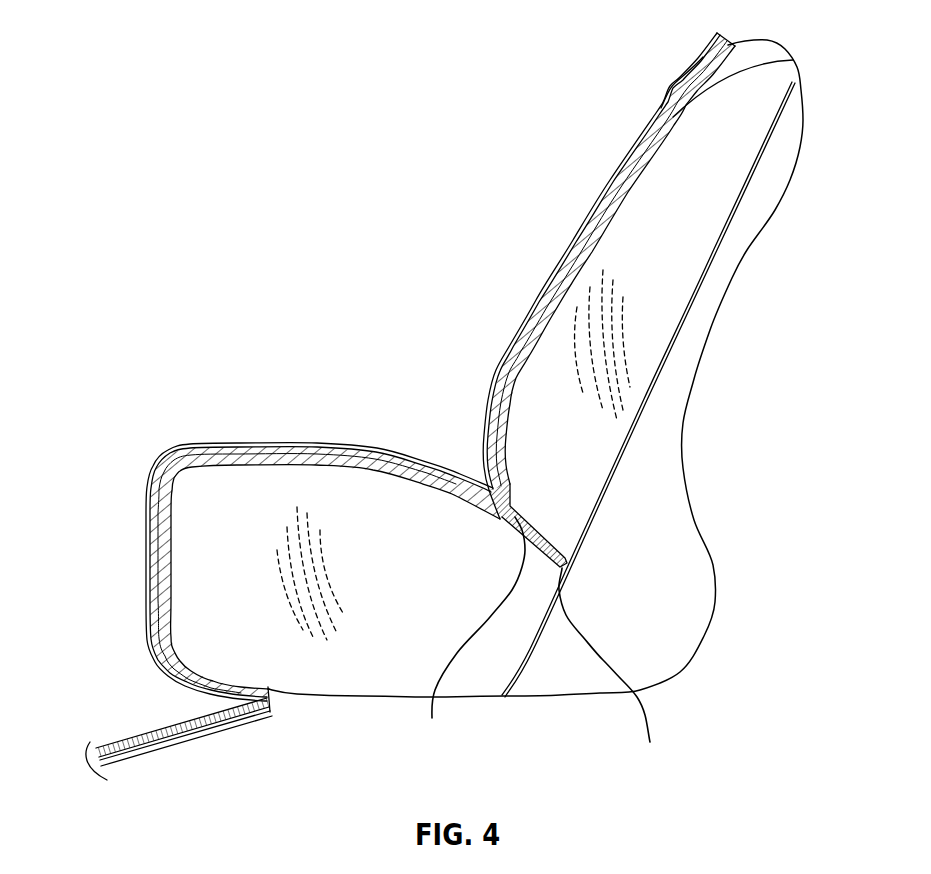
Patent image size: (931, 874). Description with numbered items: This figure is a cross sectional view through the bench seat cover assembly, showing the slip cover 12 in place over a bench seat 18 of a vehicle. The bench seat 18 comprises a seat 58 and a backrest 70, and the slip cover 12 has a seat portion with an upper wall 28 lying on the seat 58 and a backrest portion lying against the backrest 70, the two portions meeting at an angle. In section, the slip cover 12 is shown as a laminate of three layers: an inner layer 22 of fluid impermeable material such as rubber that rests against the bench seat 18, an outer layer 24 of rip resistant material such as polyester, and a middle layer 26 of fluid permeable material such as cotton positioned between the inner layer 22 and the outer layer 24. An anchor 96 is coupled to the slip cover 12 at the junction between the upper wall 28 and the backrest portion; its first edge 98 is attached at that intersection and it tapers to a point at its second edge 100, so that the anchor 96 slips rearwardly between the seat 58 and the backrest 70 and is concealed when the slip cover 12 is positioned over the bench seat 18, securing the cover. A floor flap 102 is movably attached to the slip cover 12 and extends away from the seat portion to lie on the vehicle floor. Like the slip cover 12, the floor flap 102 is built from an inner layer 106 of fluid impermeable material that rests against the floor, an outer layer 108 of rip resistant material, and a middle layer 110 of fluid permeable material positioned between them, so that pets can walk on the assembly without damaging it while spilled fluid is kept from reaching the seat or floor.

The slip cover 12 is at (594, 162).
The bench seat 18 is at (800, 68).
The inner layer 22 is at (613, 203).
The outer layer 24 is at (568, 243).
The middle layer 26 is at (686, 62).
The upper wall 28 is at (323, 544).
The seat 58 is at (212, 473).
The backrest 70 is at (545, 358).
The anchor 96 is at (471, 639).
The first edge 98 is at (497, 487).
The second edge 100 is at (616, 675).
The floor flap 102 is at (202, 714).
The inner layer 106 is at (216, 720).
The outer layer 108 is at (112, 742).
The middle layer 110 is at (126, 762).